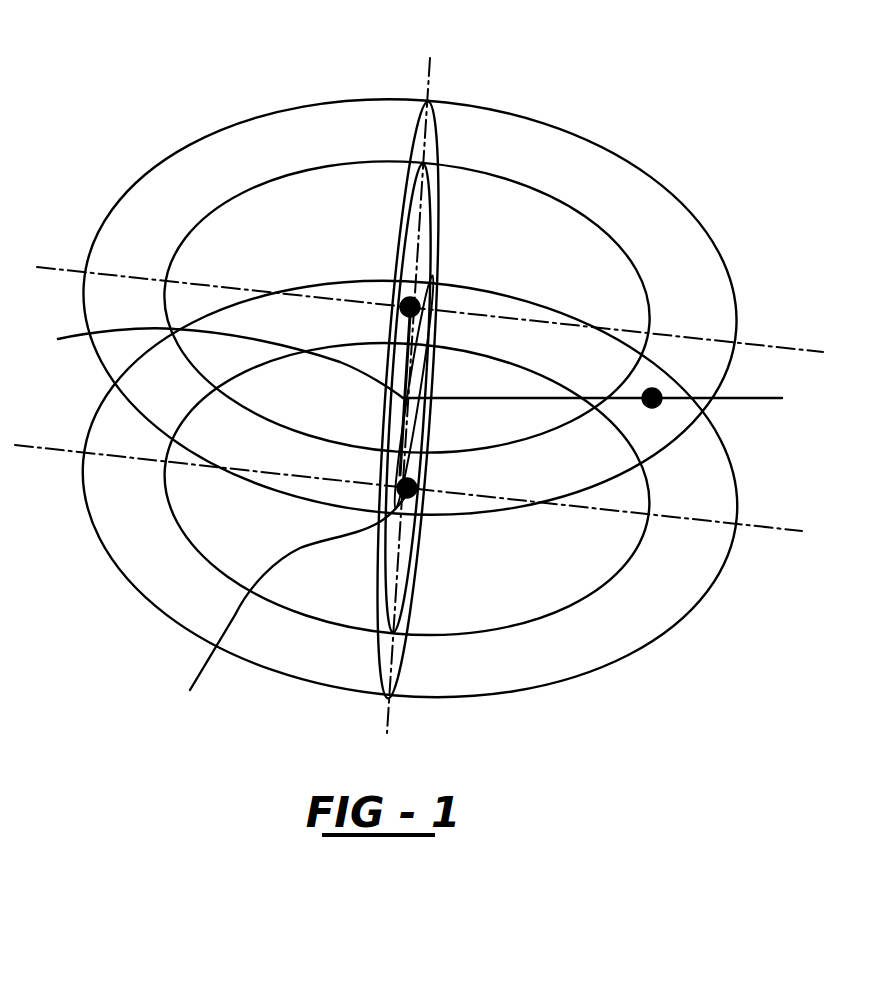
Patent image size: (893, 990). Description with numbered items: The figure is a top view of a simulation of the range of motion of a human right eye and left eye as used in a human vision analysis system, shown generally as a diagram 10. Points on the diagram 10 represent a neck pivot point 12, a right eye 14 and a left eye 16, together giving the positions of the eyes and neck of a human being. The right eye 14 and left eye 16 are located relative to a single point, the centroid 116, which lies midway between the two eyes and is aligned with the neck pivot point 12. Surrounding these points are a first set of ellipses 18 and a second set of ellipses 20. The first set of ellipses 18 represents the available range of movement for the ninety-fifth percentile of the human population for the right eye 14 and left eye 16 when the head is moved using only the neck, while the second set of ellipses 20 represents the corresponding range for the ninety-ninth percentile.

The diagram 10 is at (236, 50).
The neck pivot point 12 is at (655, 408).
The right eye 14 is at (425, 283).
The left eye 16 is at (284, 613).
The first set of ellipses 18 is at (407, 197).
The second set of ellipses 20 is at (437, 141).
The centroid 116 is at (211, 363).